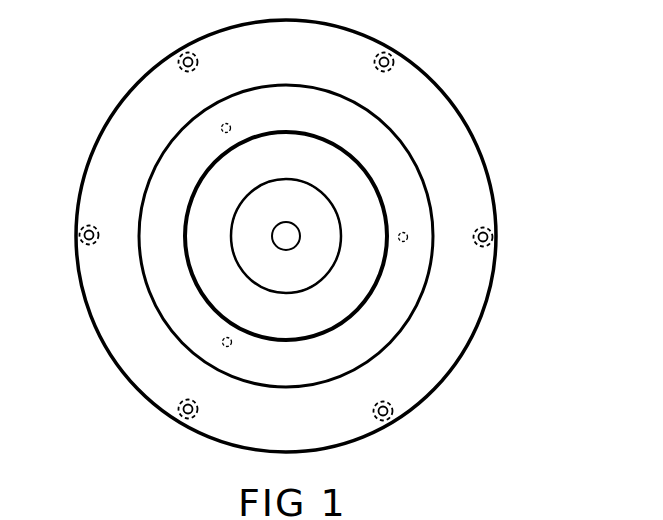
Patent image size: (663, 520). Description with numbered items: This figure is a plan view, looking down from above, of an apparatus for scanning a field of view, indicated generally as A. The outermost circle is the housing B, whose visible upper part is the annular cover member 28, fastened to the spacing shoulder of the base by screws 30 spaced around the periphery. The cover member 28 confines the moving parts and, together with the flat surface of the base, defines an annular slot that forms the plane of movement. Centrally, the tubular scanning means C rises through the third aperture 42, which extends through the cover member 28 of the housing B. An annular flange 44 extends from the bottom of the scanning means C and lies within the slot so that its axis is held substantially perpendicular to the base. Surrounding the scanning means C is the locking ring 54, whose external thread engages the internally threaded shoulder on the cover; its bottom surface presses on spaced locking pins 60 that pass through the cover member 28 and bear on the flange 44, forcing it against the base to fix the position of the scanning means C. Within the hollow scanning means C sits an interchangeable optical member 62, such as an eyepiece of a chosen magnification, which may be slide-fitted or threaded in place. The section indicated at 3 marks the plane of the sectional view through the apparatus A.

The annular cover member 28 is at (139, 329).
The locking ring 54 is at (188, 309).
The third aperture 42 is at (186, 232).
The annular flange 44 is at (230, 279).
The optical member 62 is at (330, 262).
The locking pins 60 is at (232, 125).
The screws 30 is at (186, 60).
The apparatus for scanning a field of view A is at (456, 67).
The housing B is at (486, 156).
The scanning means C is at (295, 292).
The section line 3- 3 is at (128, 234).